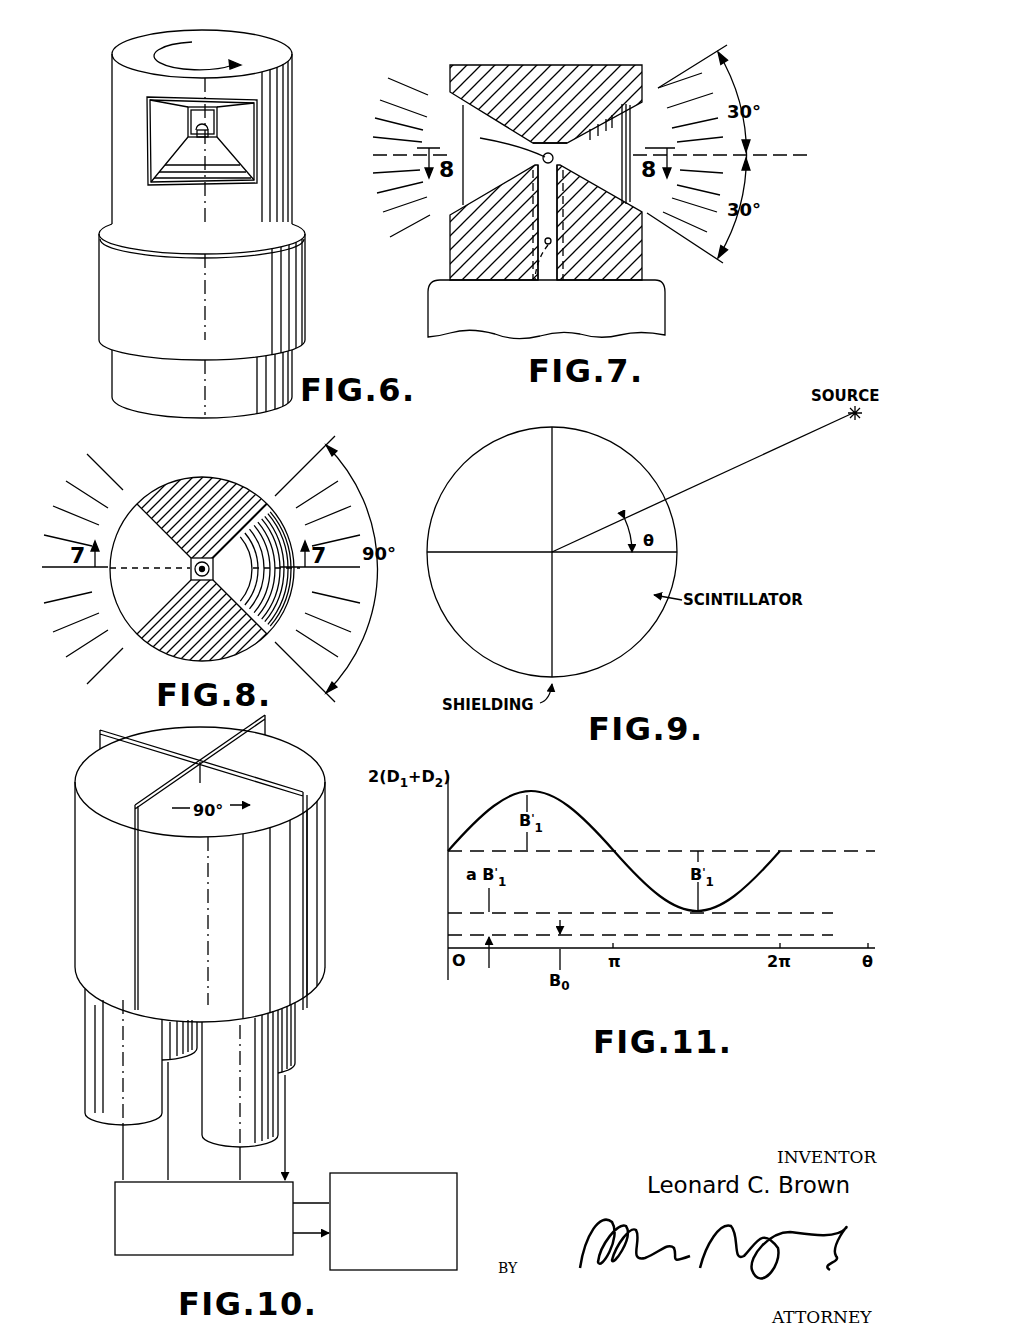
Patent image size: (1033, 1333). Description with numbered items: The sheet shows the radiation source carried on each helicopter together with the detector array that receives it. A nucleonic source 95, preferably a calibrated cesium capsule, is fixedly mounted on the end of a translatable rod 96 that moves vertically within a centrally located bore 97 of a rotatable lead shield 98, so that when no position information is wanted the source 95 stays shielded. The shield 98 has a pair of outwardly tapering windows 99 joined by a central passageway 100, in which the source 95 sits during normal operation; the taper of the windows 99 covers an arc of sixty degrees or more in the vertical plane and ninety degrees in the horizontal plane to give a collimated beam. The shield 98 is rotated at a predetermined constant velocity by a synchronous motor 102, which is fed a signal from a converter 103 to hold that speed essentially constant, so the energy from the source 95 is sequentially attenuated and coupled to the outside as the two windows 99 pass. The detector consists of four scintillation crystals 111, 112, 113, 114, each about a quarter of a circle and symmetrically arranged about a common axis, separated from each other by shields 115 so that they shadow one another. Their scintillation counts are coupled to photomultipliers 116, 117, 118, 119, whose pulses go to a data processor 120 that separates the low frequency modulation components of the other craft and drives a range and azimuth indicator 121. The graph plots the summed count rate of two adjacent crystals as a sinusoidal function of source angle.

In FIG. 6, the nucleonic source 95 is at (217, 126).
In FIG. 7, the nucleonic source 95 is at (480, 138).
In FIG. 8, the nucleonic source 95 is at (192, 567).
In FIG. 6, the translatable rod 96 is at (190, 135).
In FIG. 7, the translatable rod 96 is at (542, 161).
In FIG. 8, the translatable rod 96 is at (190, 574).
In FIG. 7, the bore 97 is at (535, 280).
In FIG. 6, the rotatable lead shield 98 is at (283, 83).
In FIG. 7, the rotatable lead shield 98 is at (555, 73).
In FIG. 8, the rotatable lead shield 98 is at (178, 495).
In FIG. 7, the windows 99 is at (473, 118).
In FIG. 8, the windows 99 is at (118, 573).
In FIG. 7, the passageway 100 is at (553, 147).
In FIG. 6, the synchronous motor 102 is at (116, 278).
In FIG. 6, the converter 103 is at (126, 384).
In FIG. 9, the scintillation crystal 111 is at (610, 458).
In FIG. 10, the scintillation crystal 111 is at (315, 877).
In FIG. 9, the scintillation crystal 112 is at (497, 448).
In FIG. 10, the scintillation crystal 112 is at (170, 737).
In FIG. 9, the scintillation crystal 113 is at (480, 647).
In FIG. 10, the scintillation crystal 113 is at (87, 858).
In FIG. 9, the scintillation crystal 114 is at (637, 635).
In FIG. 10, the scintillation crystal 114 is at (277, 963).
In FIG. 9, the shields 115 is at (497, 552).
In FIG. 10, the photomultiplier 116 is at (287, 1045).
In FIG. 10, the photomultiplier 117 is at (177, 1040).
In FIG. 10, the photomultiplier 118 is at (100, 1077).
In FIG. 10, the photomultiplier 119 is at (267, 1115).
In FIG. 10, the data processor 120 is at (118, 1219).
In FIG. 10, the range and azimuth indicator 121 is at (400, 1150).